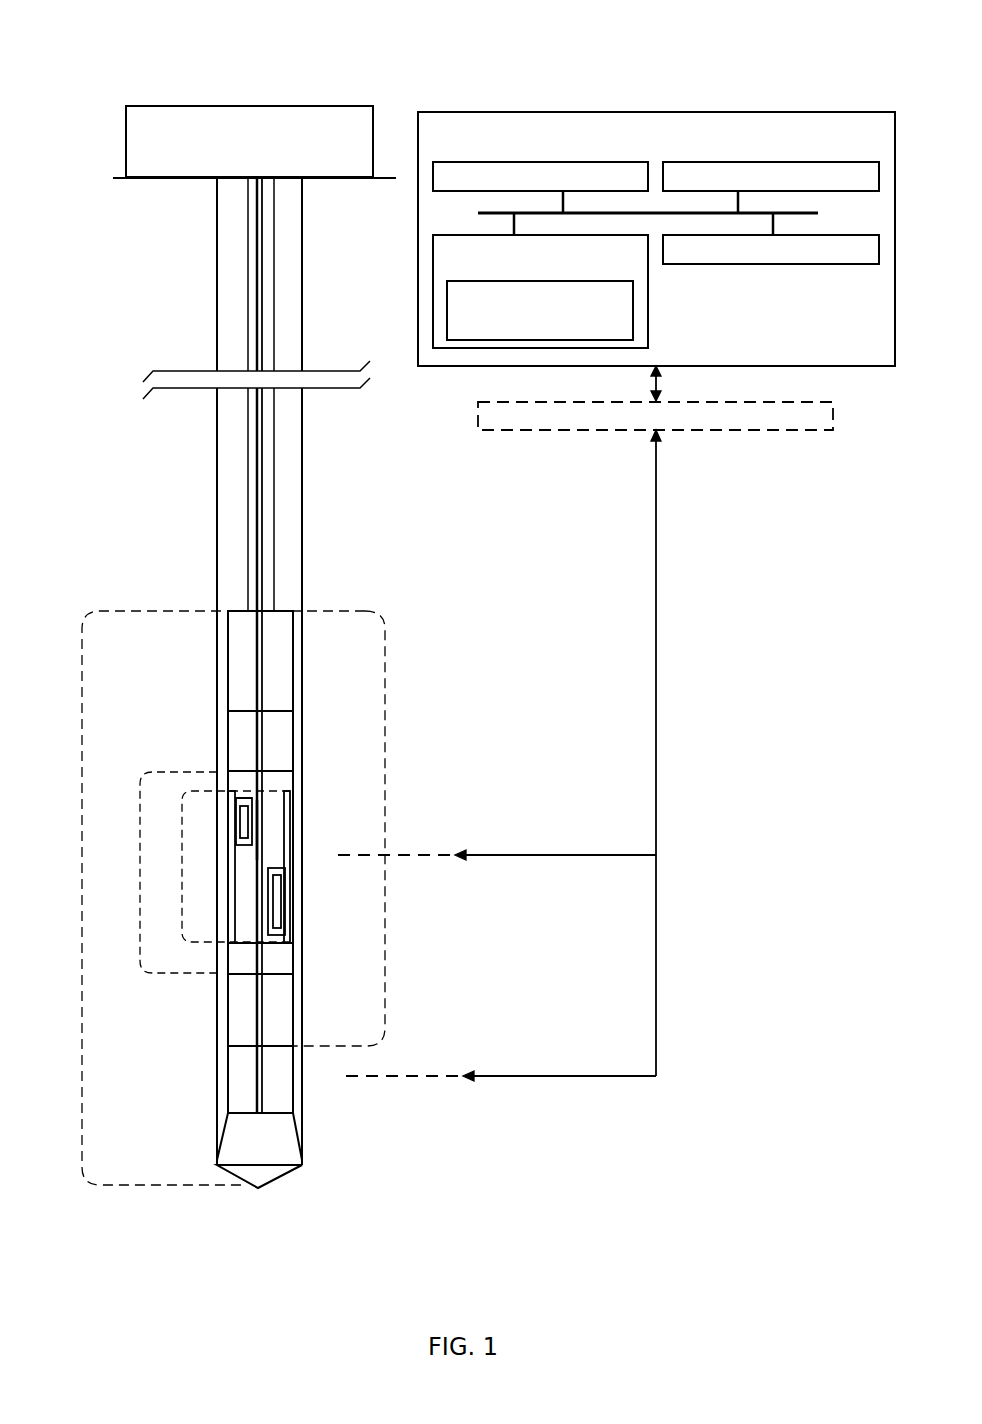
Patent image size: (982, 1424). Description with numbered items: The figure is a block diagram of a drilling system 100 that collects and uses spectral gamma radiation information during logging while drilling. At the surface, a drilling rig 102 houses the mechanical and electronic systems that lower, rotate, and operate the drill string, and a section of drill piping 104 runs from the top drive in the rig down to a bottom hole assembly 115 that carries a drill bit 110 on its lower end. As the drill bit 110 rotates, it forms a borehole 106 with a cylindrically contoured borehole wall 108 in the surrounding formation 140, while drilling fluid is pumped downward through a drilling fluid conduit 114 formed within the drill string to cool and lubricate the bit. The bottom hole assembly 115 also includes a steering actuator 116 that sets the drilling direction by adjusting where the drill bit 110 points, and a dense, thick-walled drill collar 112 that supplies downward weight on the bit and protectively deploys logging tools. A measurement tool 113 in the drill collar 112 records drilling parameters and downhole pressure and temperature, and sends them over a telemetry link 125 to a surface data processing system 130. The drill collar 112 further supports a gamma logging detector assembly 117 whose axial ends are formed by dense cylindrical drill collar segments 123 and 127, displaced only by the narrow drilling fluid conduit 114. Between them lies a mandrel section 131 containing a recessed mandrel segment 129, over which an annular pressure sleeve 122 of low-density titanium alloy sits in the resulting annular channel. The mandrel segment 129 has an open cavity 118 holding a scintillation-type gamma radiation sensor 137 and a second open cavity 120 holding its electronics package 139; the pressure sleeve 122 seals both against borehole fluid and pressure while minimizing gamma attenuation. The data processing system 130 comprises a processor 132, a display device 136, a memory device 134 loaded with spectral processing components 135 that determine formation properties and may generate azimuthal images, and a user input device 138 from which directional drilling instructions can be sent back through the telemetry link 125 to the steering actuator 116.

The drilling system 100 is at (368, 74).
The drilling rig 102 is at (330, 150).
The drill piping 104 is at (277, 322).
The borehole 106 is at (230, 247).
The borehole wall 108 is at (302, 268).
The drill bit 110 is at (283, 1138).
The drill collar 112 is at (386, 826).
The measurement tool 113 is at (280, 746).
The drilling fluid conduit 114 is at (257, 342).
The bottom hole assembly 115 is at (82, 898).
The steering actuator 116 is at (237, 1080).
The gamma logging detector assembly 117 is at (140, 873).
The open cavity 118 is at (280, 935).
The open cavity 120 is at (237, 800).
The annular pressure sleeve 122 is at (237, 855).
The drill collar segment 123 is at (250, 792).
The telemetry link 125 is at (753, 425).
The drill collar segment 127 is at (242, 955).
The mandrel segment 129 is at (240, 905).
The data processing system 130 is at (800, 138).
The mandrel section 131 is at (182, 847).
The processor 132 is at (618, 188).
The memory device 134 is at (600, 263).
The spectral processing components 135 is at (620, 331).
The display device 136 is at (868, 188).
The gamma radiation sensor 137 is at (279, 911).
The user input device 138 is at (838, 258).
The electronics package 139 is at (240, 831).
The formation 140 is at (496, 661).